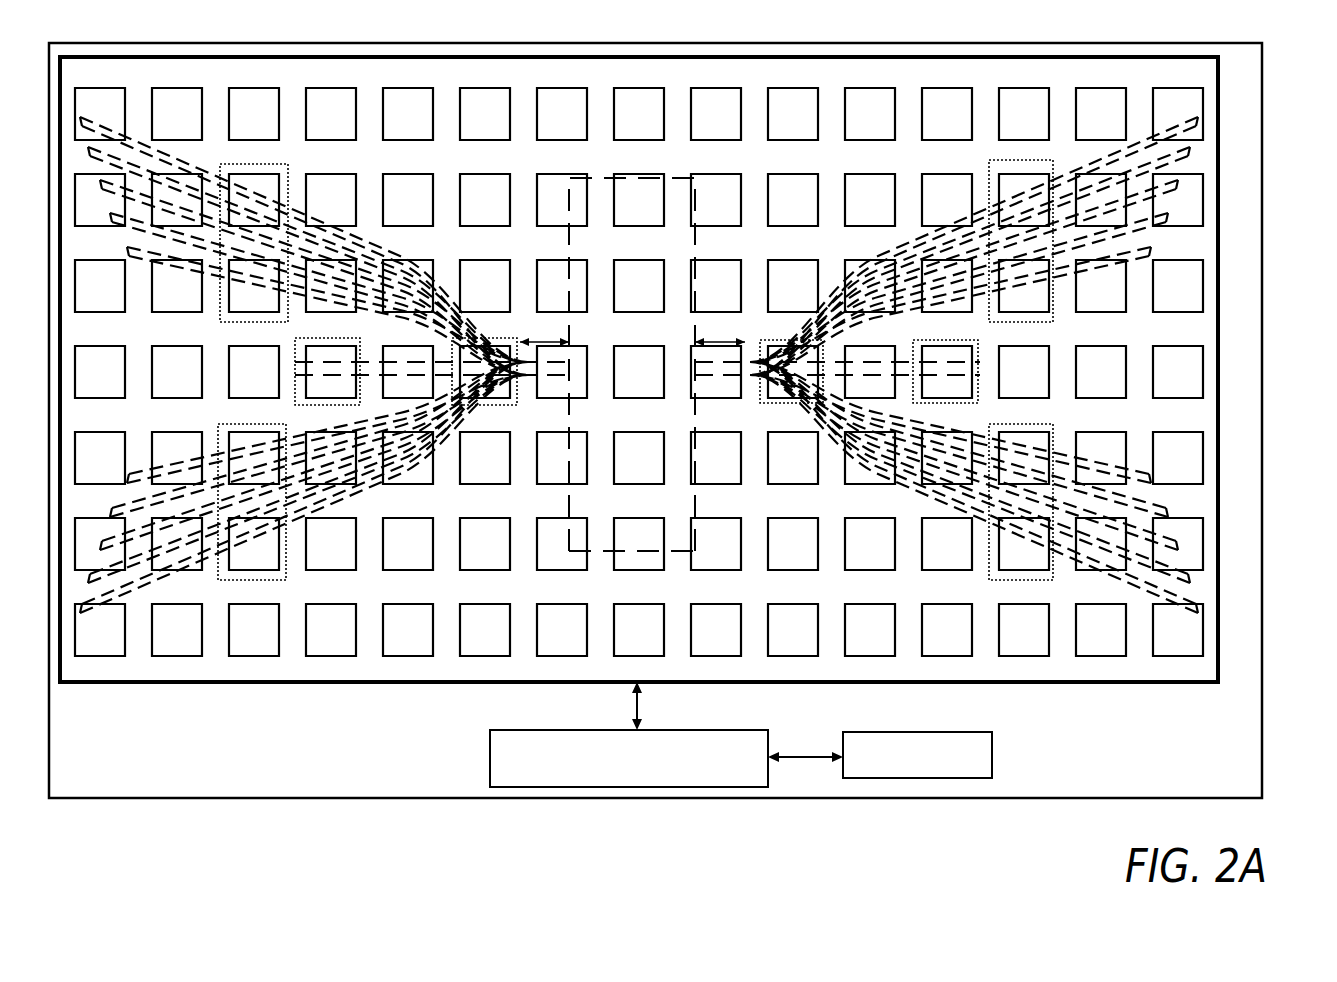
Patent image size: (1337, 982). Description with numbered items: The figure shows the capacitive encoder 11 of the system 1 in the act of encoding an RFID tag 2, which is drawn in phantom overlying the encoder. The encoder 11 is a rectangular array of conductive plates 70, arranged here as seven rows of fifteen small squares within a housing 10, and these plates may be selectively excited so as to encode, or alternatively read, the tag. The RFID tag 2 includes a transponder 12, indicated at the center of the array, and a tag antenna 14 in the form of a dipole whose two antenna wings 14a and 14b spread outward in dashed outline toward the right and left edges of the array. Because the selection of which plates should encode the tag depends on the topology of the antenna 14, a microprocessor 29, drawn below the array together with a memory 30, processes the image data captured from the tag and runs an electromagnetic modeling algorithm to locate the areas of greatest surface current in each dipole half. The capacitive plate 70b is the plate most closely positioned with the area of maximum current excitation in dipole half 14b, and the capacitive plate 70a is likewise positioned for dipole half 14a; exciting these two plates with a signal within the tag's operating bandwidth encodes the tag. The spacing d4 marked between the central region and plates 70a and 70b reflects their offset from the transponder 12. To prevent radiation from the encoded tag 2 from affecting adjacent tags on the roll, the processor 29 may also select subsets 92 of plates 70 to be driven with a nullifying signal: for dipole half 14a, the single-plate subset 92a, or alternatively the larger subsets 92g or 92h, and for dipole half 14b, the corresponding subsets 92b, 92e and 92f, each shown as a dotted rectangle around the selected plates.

The system 1 is at (1276, 70).
The RFID tag 2 is at (653, 175).
The detector housing 10 is at (1262, 682).
The capacitive encoder 11 is at (1218, 470).
The transponder 12 is at (594, 554).
The tag antenna 14 is at (364, 192).
The antenna wing 14a is at (1140, 230).
The antenna wing 14b is at (130, 234).
The microprocessor 29 is at (490, 759).
The memory 30 is at (993, 752).
The conductive plates 70 is at (553, 104).
The capacitive plate 70a is at (756, 402).
The capacitive plate 70b is at (516, 402).
The subsets of plates 92 is at (1063, 336).
The subset 92a is at (984, 402).
The subset 92b is at (294, 402).
The subset 92e is at (217, 320).
The subset 92f is at (286, 578).
The subset 92g is at (986, 172).
The subset 92h is at (987, 576).
The distance d4 is at (632, 332).